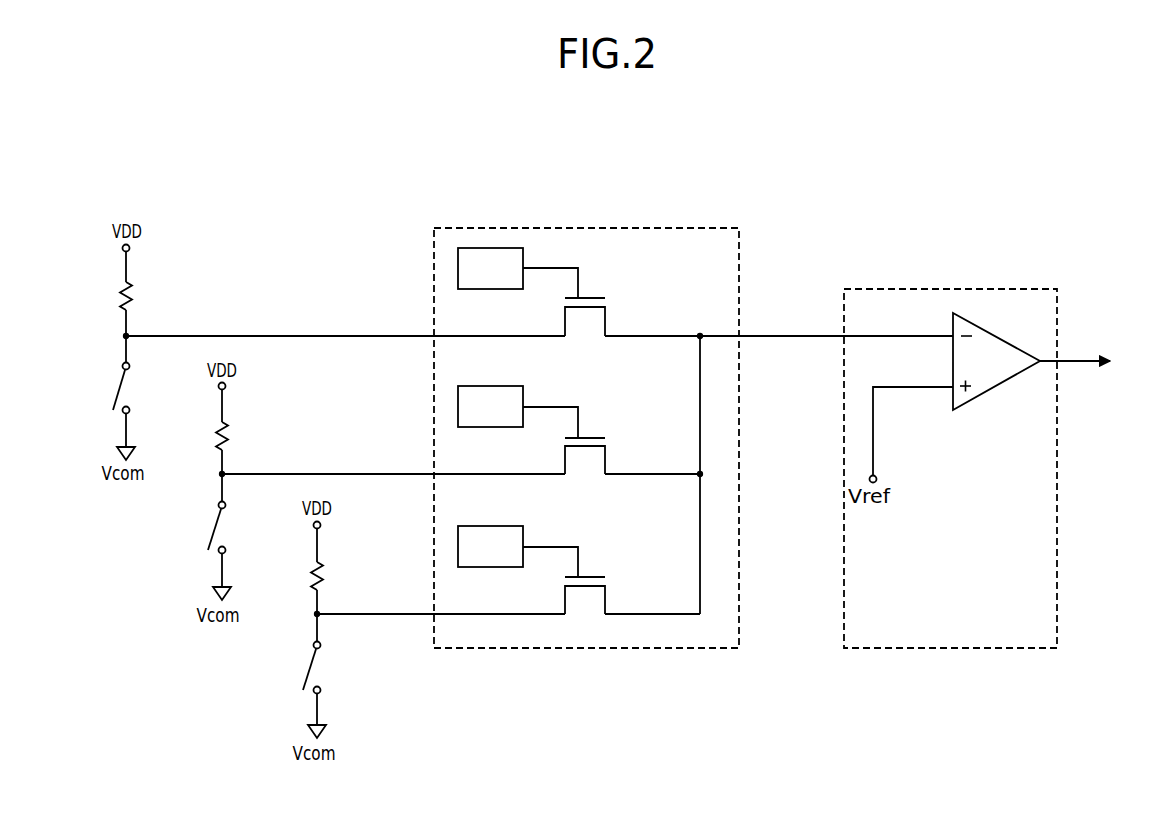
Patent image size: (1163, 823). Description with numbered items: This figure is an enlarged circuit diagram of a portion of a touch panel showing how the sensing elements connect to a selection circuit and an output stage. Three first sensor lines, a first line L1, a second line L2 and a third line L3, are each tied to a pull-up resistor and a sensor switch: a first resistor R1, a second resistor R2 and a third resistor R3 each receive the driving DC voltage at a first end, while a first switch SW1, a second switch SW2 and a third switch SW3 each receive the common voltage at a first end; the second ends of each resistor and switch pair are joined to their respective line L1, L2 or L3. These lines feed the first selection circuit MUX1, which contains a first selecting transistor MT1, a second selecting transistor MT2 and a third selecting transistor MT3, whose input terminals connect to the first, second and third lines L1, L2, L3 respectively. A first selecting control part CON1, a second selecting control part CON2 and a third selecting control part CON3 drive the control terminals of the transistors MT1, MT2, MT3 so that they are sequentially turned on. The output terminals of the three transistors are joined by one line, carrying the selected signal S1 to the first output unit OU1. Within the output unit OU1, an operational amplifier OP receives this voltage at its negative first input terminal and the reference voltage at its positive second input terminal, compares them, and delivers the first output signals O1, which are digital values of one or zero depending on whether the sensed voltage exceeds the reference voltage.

The first resistor R1 is at (112, 297).
The second resistor R2 is at (207, 436).
The third resistor R3 is at (303, 577).
The first switch SW1 is at (106, 388).
The second switch SW2 is at (200, 528).
The third switch SW3 is at (296, 668).
The first line L1 is at (288, 322).
The second line L2 is at (344, 462).
The third line L3 is at (371, 602).
The first selection circuit MUX1 is at (583, 228).
The first selecting control part CON1 is at (490, 268).
The second selecting control part CON2 is at (490, 406).
The third selecting control part CON3 is at (490, 546).
The first selecting transistor MT1 is at (616, 304).
The second selecting transistor MT2 is at (616, 434).
The third selecting transistor MT3 is at (616, 574).
The multiplexed sensing signal S1 is at (818, 347).
The first output unit OU1 is at (918, 289).
The operational amplifier OP is at (992, 322).
The first output signals O1 is at (1090, 363).